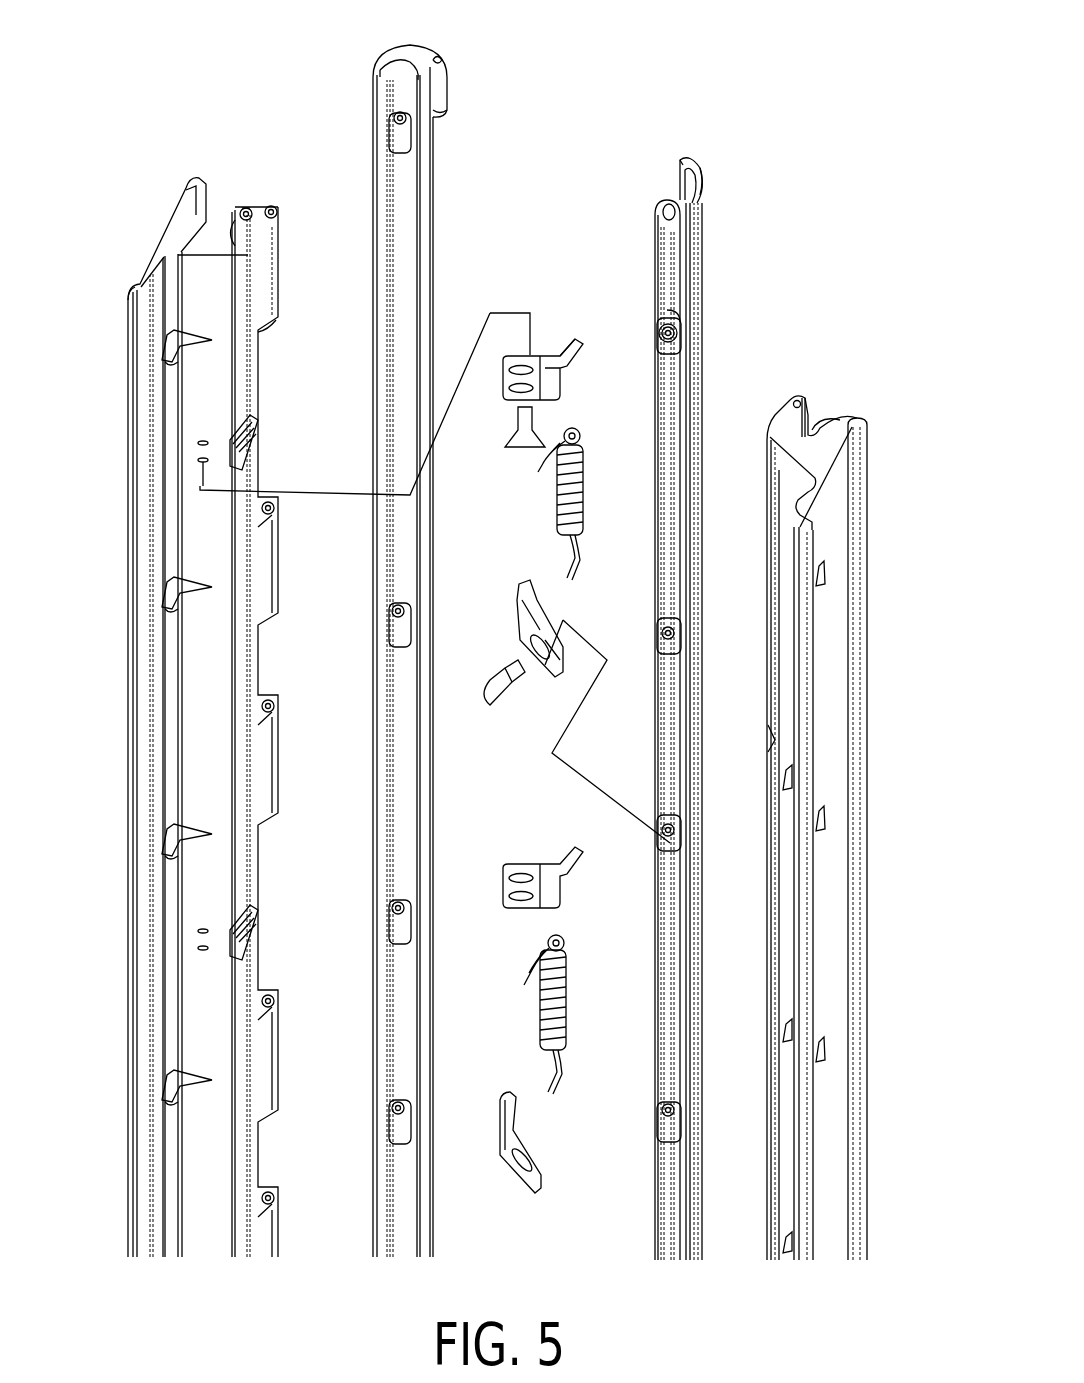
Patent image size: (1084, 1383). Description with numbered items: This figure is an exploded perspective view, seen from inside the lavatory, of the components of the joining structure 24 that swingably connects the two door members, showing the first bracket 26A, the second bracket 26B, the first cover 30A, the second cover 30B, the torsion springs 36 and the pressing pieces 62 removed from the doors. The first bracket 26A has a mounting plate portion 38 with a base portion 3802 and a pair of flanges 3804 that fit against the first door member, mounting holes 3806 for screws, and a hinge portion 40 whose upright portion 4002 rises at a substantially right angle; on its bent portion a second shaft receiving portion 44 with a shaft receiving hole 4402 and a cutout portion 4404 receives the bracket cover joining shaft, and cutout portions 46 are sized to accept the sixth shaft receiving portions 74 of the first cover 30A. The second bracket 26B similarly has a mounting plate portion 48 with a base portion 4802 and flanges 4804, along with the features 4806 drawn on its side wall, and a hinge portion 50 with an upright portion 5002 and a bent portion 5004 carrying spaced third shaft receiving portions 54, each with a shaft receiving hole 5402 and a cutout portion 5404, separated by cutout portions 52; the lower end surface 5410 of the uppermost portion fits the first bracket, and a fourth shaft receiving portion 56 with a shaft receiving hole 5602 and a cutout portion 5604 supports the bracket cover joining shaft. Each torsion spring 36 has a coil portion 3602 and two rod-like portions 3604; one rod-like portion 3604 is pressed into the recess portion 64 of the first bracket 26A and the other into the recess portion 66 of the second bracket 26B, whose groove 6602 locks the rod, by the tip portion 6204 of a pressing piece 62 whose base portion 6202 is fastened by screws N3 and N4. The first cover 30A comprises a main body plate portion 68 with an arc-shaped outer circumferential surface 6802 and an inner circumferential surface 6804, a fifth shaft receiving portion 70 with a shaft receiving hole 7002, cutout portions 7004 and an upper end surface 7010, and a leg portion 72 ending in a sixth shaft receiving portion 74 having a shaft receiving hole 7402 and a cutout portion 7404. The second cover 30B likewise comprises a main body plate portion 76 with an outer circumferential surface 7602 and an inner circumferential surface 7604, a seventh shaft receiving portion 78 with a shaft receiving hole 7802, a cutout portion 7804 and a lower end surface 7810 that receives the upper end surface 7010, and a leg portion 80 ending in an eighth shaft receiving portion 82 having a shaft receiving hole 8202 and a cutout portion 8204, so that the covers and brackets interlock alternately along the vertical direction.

The joining structure 24 is at (578, 55).
The first bracket 26A is at (858, 338).
The second bracket 26B is at (178, 122).
The first cover 30A is at (673, 137).
The second cover 30B is at (450, 227).
The torsion spring 36 is at (590, 483).
The coil portion 3602 is at (558, 508).
The rod-like portion 3604 is at (547, 460).
The mounting plate portion 38 is at (800, 507).
The base portion 3802 is at (833, 542).
The flange 3804 is at (867, 503).
The mounting hole 3806 is at (818, 573).
The hinge portion 40 is at (768, 503).
The upright portion 4002 is at (782, 470).
The second shaft receiving portion 44 is at (823, 425).
The shaft receiving hole 4402 is at (797, 403).
The cutout portion 4404 is at (813, 400).
The cutout portion 46 is at (820, 428).
The mounting plate portion 48 is at (178, 253).
The base portion 4802 is at (172, 223).
The flange 4804 is at (185, 187).
The claw 4806 is at (170, 350).
The hinge portion 50 is at (240, 263).
The upright portion 5002 is at (212, 317).
The bent portion 5004 is at (240, 275).
The cutout portion 52 is at (270, 462).
The third shaft receiving portion 54 is at (278, 237).
The lower end surface 5410 is at (260, 328).
The fourth shaft receiving portion 56 is at (241, 210).
The shaft receiving hole 5602 is at (250, 207).
The cutout portion 5604 is at (247, 205).
The shaft receiving hole 5402 is at (278, 205).
The cutout portion 5404 is at (277, 212).
The pressing piece 62 is at (503, 380).
The base portion 6202 is at (540, 722).
The tip portion 6204 is at (573, 340).
The recess portion 64 is at (768, 735).
The recess portion 66 is at (253, 430).
The groove 6602 is at (233, 443).
The main body plate portion 68 is at (697, 188).
The outer circumferential surface 6802 is at (697, 170).
The inner circumferential surface 6804 is at (682, 170).
The fifth shaft receiving portion 70 is at (653, 222).
The shaft receiving hole 7002 is at (670, 207).
The cutout portion 7004 is at (667, 247).
The upper end surface 7010 is at (657, 222).
The leg portion 72 is at (697, 197).
The sixth shaft receiving portion 74 is at (660, 347).
The shaft receiving hole 7402 is at (677, 340).
The cutout portion 7404 is at (670, 312).
The main body plate portion 76 is at (423, 48).
The outer circumferential surface 7602 is at (397, 45).
The inner circumferential surface 7604 is at (412, 63).
The seventh shaft receiving portion 78 is at (450, 76).
The shaft receiving hole 7802 is at (440, 58).
The cutout portion 7804 is at (420, 93).
The lower end surface 7810 is at (442, 120).
The leg portion 80 is at (398, 62).
The eighth shaft receiving portion 82 is at (412, 143).
The shaft receiving hole 8202 is at (398, 122).
The cutout portion 8204 is at (398, 112).
The screw N3 is at (477, 690).
The screw N4 is at (533, 427).